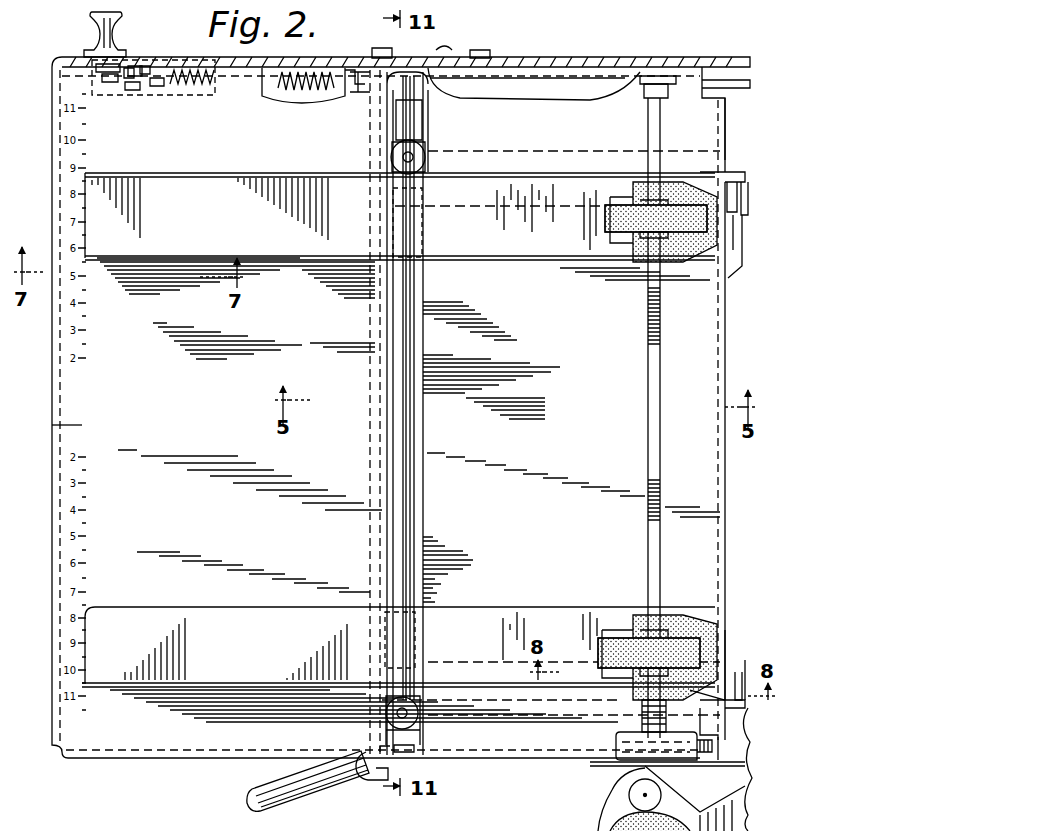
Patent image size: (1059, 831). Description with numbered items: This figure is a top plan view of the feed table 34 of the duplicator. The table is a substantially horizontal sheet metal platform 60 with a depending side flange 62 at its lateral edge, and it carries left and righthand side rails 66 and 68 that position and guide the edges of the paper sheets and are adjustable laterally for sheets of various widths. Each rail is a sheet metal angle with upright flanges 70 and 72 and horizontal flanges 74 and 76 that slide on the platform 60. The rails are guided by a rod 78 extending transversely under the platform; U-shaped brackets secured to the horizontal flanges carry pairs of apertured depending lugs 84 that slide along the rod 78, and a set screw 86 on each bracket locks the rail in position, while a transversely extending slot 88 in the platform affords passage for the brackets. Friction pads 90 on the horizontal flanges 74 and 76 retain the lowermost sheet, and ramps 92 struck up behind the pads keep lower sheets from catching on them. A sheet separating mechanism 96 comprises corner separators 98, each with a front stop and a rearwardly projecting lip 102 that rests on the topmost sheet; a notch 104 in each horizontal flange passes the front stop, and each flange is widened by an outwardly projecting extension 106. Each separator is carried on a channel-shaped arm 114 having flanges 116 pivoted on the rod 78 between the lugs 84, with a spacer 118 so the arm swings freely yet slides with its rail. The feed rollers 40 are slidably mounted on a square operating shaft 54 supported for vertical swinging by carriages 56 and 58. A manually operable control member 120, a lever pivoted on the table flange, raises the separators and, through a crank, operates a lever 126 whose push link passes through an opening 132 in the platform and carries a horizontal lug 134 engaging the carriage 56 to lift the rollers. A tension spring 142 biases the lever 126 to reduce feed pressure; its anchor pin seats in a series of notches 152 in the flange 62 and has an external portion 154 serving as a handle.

The feed table 34 is at (48, 770).
The feed rollers 40 is at (605, 216).
The transverse operating shaft 54 is at (648, 413).
The lefthand feed roller arm or carriage 56 is at (700, 57).
The righthand feed roller arm or carriage 58 is at (668, 762).
The feed table platform 60 is at (52, 425).
The lefthand side flange 62 is at (75, 60).
The lefthand side rail 66 is at (108, 184).
The righthand side rail 68 is at (116, 668).
The upright flange 70 is at (208, 178).
The upright flange 72 is at (204, 683).
The horizontal flange 74 is at (186, 262).
The horizontal flange 76 is at (233, 618).
The guide rod 78 is at (420, 517).
The depending lugs or flanges 84 is at (385, 736).
The set screw 86 is at (426, 152).
The transversely extending slot 88 is at (420, 418).
The friction pads 90 is at (688, 262).
The ramps 92 is at (620, 243).
The sheet separating mechanism 96 is at (748, 146).
The corner separators 98 is at (750, 196).
The lip 102 is at (730, 175).
The notch 104 is at (737, 232).
The outwardly projecting extension 106 is at (748, 772).
The arm 114 is at (492, 192).
The flanges 116 is at (528, 142).
The spacer 118 is at (432, 262).
The manually operable control member 120 is at (302, 792).
The lever 126 is at (556, 70).
The opening 132 is at (648, 76).
The horizontal lug or flange 134 is at (640, 88).
The tension spring 142 is at (300, 75).
The notches 152 is at (140, 60).
The external portion 154 is at (92, 22).